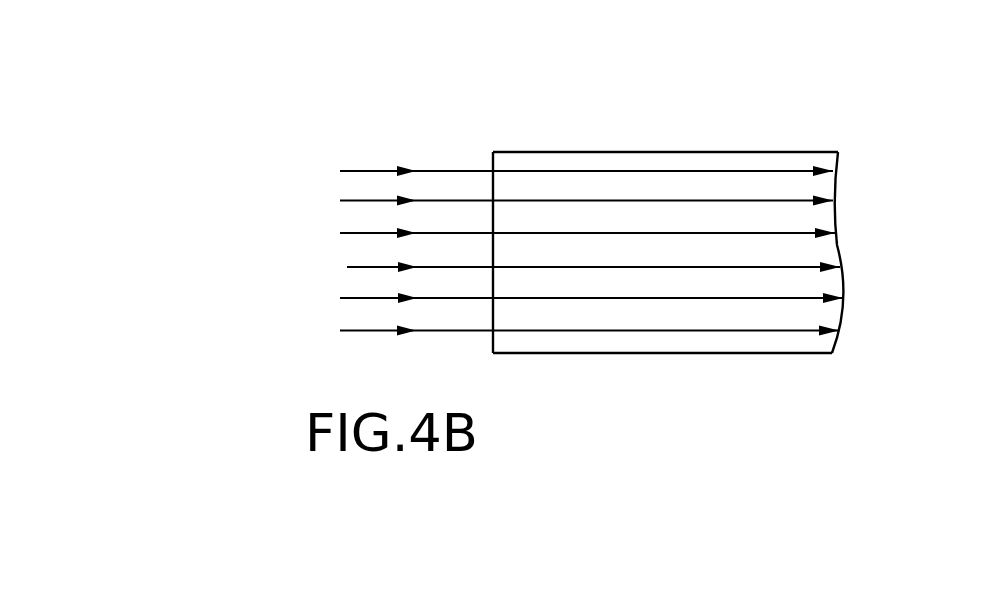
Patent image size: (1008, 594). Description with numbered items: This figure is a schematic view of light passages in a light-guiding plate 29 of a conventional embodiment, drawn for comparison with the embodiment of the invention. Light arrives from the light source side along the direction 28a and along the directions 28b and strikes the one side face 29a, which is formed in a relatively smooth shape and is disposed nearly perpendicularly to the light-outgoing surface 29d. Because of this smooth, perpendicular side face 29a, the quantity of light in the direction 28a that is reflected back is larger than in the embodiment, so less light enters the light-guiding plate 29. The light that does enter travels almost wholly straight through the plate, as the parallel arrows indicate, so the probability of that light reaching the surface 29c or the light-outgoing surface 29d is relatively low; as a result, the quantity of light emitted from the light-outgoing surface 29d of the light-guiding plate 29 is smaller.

The direction 28a is at (306, 243).
The off-axis light rays 28b is at (306, 193).
The light-guiding plate 29 is at (622, 234).
The one side face 29a is at (491, 163).
The surface 29c is at (777, 353).
The light-outgoing surface 29d is at (753, 150).